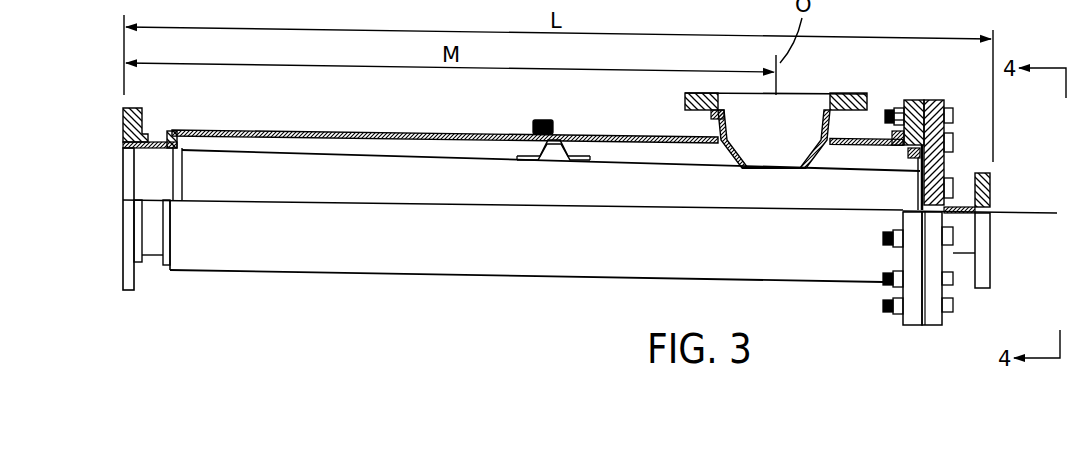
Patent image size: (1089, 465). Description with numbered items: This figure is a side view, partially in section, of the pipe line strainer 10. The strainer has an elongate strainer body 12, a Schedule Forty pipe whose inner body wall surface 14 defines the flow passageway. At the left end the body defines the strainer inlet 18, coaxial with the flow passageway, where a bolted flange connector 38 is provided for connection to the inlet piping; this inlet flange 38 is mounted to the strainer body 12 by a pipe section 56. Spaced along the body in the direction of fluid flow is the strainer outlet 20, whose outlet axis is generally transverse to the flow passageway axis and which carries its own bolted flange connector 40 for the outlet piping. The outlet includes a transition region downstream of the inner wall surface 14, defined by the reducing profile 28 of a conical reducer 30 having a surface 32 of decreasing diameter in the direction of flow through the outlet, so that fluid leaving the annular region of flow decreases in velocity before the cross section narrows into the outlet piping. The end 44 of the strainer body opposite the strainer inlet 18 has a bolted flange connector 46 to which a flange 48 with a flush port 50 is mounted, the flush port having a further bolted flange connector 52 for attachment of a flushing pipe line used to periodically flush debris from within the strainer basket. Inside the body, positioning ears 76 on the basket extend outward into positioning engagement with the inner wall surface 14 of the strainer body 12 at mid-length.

The pipe line strainer 10 is at (857, 351).
The strainer body 12 is at (310, 130).
The inner body wall surface 14 is at (400, 138).
The strainer inlet 18 is at (117, 269).
The strainer outlet 20 is at (797, 92).
The reducing profile 28 is at (718, 130).
The conical reducer 30 is at (817, 158).
The surface of decreasing diameter 32 is at (786, 139).
The bolted flange connector 38 is at (127, 293).
The bolted flange connector 40 is at (840, 93).
The end of the strainer body 44 is at (870, 283).
The bolted flange connector 46 is at (912, 99).
The flange 48 is at (942, 99).
The flush port 50 is at (1004, 231).
The bolted flange connector 52 is at (980, 290).
The pipe section 56 is at (153, 258).
The positioning ears 76 is at (565, 146).